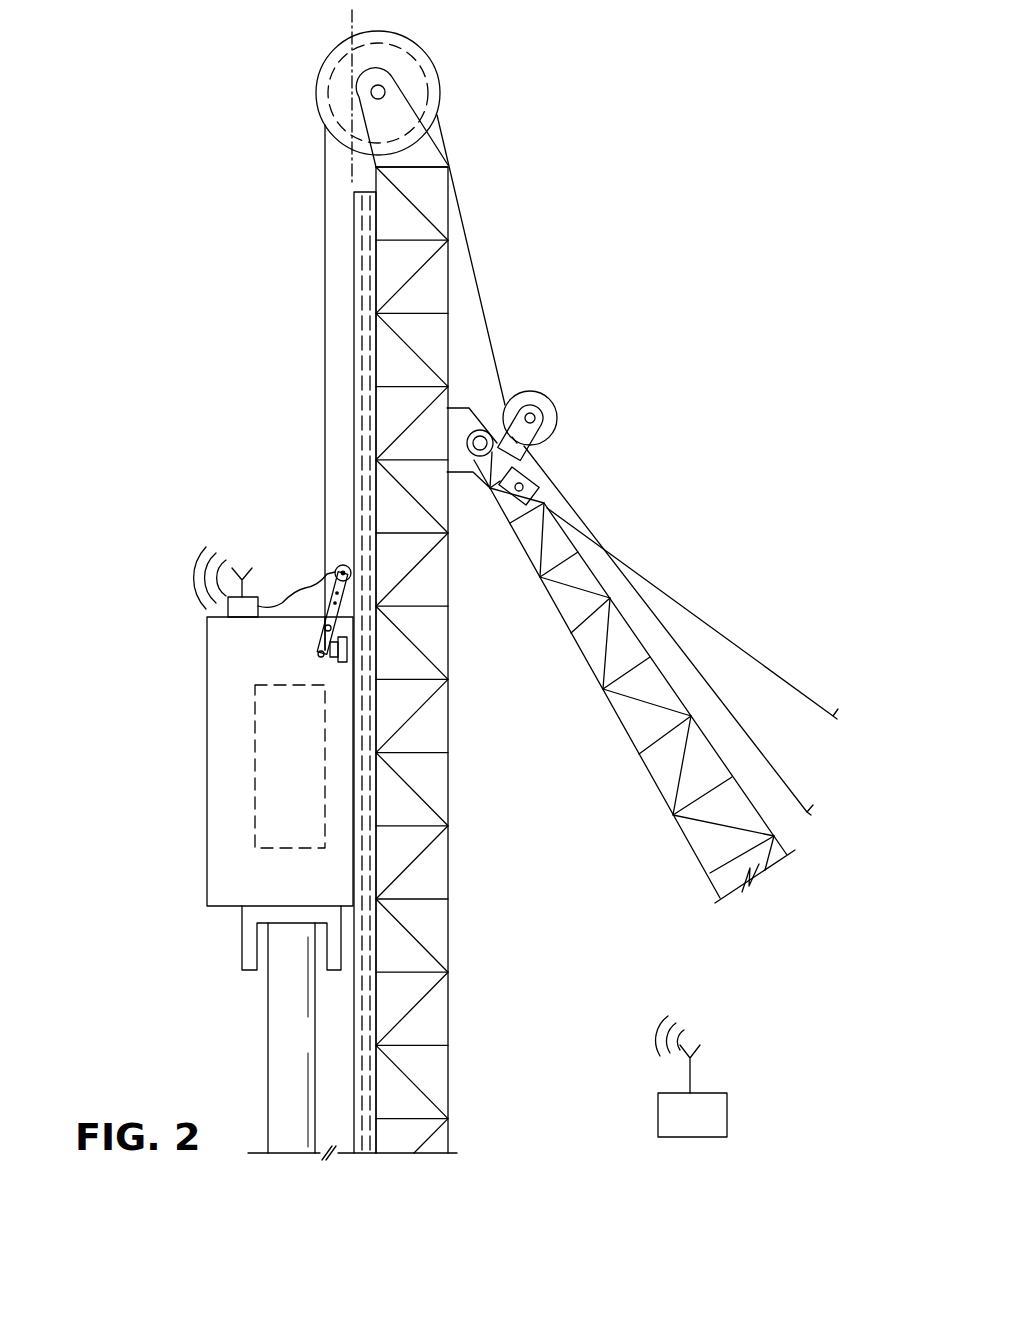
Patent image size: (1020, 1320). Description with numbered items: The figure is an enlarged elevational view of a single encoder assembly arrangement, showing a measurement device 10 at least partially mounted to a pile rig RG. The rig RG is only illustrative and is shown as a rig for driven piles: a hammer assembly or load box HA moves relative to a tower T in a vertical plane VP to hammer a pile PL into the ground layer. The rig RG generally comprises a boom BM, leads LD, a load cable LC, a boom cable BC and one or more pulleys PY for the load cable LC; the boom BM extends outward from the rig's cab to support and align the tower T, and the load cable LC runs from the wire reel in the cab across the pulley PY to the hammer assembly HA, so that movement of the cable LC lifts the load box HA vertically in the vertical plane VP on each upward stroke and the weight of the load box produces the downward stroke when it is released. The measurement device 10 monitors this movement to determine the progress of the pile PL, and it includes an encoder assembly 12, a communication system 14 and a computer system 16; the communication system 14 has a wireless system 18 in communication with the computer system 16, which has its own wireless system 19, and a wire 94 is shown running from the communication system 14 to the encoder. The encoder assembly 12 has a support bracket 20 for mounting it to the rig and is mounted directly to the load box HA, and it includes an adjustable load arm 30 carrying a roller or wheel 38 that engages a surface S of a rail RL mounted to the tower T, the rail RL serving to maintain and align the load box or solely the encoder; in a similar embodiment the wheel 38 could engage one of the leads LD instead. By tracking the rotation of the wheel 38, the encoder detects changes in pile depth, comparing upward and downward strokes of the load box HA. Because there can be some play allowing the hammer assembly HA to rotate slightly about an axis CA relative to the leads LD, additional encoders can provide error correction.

The vertical plane VP is at (350, 26).
The pulley PY is at (425, 88).
The rig RG is at (708, 283).
The rail RL is at (356, 285).
The surface S is at (352, 336).
The load cable LC is at (325, 358).
The leads LD is at (376, 416).
The measurement device 10 is at (196, 455).
The wireless system 18 is at (236, 566).
The wire 94 is at (284, 602).
The roller or wheel 38 is at (332, 560).
The load arm 30 is at (354, 602).
The communication system 14 is at (228, 610).
The encoder assembly 12 is at (296, 649).
The support bracket 20 is at (327, 667).
The axis CA is at (282, 766).
The hammer assembly or load box HA is at (222, 826).
The tower T is at (460, 737).
The boom cable BC is at (720, 626).
The boom BM is at (652, 782).
The pile PL is at (282, 1038).
The wireless system 19 is at (700, 1055).
The computer system 16 is at (722, 1115).